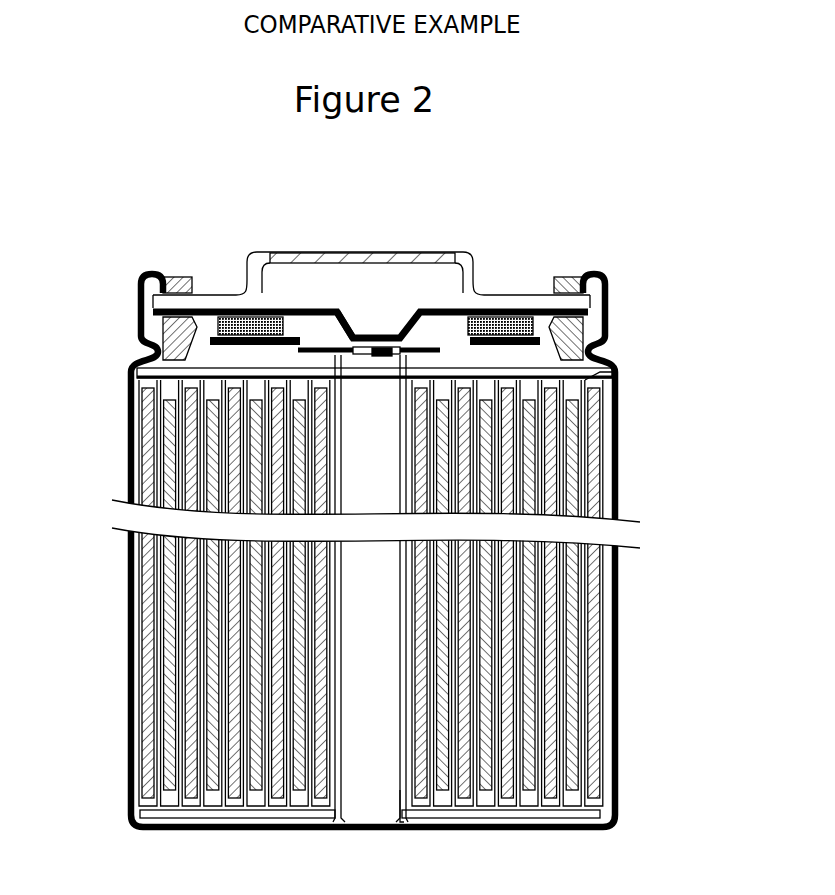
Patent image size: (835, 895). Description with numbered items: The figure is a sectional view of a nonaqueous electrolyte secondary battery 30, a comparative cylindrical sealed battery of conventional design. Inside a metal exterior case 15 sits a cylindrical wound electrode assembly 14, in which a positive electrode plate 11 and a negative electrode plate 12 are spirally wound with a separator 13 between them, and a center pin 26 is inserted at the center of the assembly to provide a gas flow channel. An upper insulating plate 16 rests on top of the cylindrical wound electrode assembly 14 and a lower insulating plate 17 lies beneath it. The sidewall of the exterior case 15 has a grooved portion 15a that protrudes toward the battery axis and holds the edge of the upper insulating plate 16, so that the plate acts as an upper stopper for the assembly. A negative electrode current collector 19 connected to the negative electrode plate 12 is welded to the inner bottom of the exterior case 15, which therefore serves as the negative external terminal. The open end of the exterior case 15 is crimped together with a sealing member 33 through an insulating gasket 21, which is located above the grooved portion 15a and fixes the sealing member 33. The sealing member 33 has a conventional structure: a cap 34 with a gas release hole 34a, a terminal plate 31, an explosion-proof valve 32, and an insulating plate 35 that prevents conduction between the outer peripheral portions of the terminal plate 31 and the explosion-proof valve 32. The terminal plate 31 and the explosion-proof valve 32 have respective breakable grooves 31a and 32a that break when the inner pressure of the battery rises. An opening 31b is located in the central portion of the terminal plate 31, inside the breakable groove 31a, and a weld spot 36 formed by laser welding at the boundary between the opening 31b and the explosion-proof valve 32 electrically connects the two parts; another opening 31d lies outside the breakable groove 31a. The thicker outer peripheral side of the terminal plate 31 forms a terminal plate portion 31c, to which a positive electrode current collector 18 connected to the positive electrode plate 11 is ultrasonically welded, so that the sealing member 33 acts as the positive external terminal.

The nonaqueous electrolyte secondary battery 30 is at (97, 191).
The positive electrode plate 11 is at (168, 643).
The negative electrode plate 12 is at (148, 699).
The separator 13 is at (158, 757).
The cylindrical wound electrode assembly 14 is at (610, 748).
The exterior case 15 is at (617, 694).
The grooved portion 15a is at (600, 352).
The upper insulating plate 16 is at (180, 376).
The lower insulating plate 17 is at (598, 816).
The positive electrode current collector 18 is at (593, 375).
The negative electrode current collector 19 is at (140, 813).
The insulating gasket 21 is at (200, 335).
The center pin 26 is at (407, 792).
The terminal plate 31 is at (386, 362).
The breakable groove 31a is at (345, 360).
The opening 31b is at (422, 360).
The terminal plate portion 31c is at (294, 360).
The opening 31d is at (268, 357).
The explosion-proof valve 32 is at (347, 320).
The breakable groove 32a is at (296, 300).
The sealing member 33 is at (238, 273).
The cap 34 is at (378, 252).
The gas release hole 34a is at (505, 290).
The insulating plate 35 is at (165, 284).
The weld spot 36 is at (393, 335).